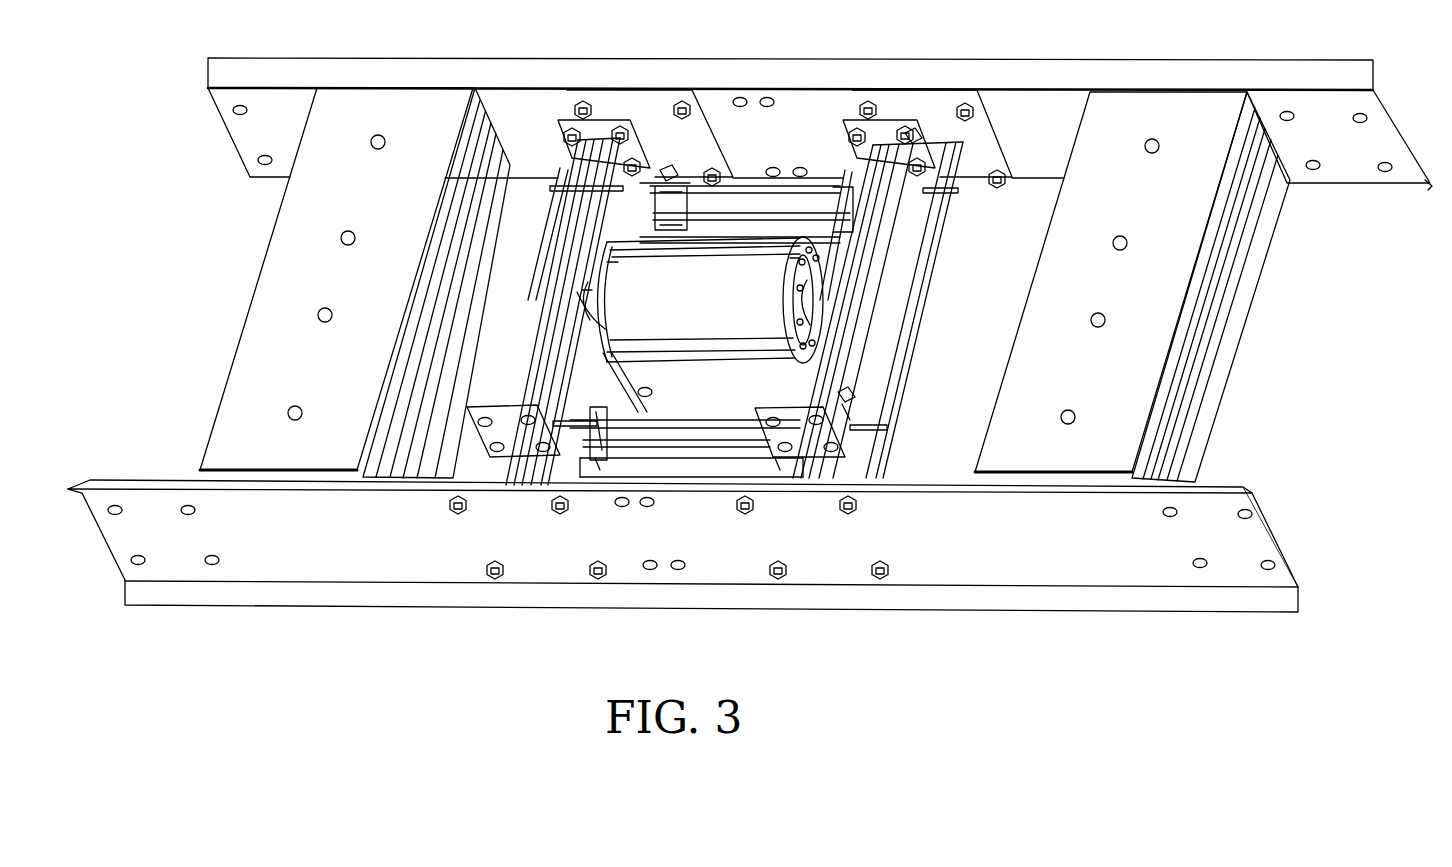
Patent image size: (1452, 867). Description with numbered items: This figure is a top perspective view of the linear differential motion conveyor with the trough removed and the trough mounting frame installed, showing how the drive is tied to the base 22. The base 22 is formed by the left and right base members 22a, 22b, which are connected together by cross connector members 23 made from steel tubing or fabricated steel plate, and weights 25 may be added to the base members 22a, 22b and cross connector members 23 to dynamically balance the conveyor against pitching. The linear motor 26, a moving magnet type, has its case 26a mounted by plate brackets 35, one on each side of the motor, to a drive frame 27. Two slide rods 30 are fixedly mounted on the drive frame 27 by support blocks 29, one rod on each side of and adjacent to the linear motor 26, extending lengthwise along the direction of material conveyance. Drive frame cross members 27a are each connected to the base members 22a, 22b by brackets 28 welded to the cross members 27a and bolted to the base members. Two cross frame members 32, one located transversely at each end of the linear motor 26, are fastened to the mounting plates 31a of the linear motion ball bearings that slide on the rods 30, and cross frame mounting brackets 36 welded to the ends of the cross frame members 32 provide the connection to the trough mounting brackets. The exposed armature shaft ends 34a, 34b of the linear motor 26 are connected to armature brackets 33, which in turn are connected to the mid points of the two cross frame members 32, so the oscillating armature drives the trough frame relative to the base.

The base 22 is at (750, 349).
The left base member 22a is at (462, 593).
The right base member 22b is at (1095, 68).
The cross connector member 23 is at (440, 347).
The weight 25 is at (275, 273).
The linear motor 26 is at (696, 357).
The case 26a is at (720, 310).
The drive frame 27 is at (968, 238).
The drive frame cross member 27a is at (917, 340).
The bracket 28 is at (632, 103).
The support block 29 is at (610, 458).
The slide rod 30 is at (568, 188).
The mounting plate 31a is at (672, 175).
The cross frame member 32 is at (548, 295).
The armature bracket 33 is at (580, 331).
The armature shaft end 34a is at (813, 303).
The armature shaft end 34b is at (587, 290).
The plate bracket 35 is at (608, 267).
The cross frame mounting bracket 36 is at (520, 458).